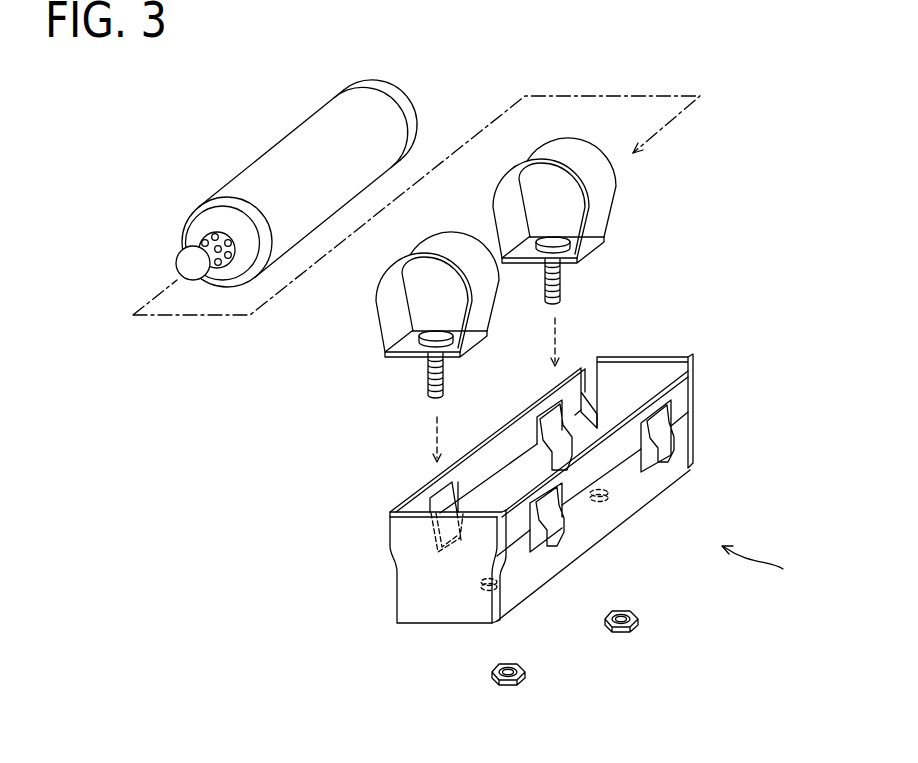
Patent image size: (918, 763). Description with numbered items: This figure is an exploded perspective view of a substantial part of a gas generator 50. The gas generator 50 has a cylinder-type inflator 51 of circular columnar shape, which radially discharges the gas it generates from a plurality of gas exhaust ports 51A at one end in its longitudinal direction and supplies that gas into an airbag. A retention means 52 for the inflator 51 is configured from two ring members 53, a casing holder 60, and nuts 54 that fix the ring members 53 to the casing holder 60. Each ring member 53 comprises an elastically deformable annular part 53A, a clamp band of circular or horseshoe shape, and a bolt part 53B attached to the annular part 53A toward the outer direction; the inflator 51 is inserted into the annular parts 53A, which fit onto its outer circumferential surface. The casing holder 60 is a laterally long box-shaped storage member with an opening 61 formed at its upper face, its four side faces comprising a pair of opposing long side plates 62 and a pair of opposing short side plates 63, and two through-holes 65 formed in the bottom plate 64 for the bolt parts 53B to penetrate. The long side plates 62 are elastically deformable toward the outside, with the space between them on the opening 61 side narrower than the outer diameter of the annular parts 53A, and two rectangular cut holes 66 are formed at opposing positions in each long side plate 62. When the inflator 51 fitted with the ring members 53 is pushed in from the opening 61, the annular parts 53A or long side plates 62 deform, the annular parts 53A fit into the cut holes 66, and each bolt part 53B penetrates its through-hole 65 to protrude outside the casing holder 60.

The gas generator 50 is at (169, 126).
The cylinder-type inflator 51 is at (292, 183).
The gas exhaust ports 51A is at (215, 236).
The retention means 52 is at (292, 453).
The ring member 53 is at (499, 278).
The annular part 53A is at (612, 187).
The bolt part 53B is at (561, 284).
The nut 54 is at (642, 622).
The casing holder 60 is at (709, 419).
The opening 61 is at (621, 387).
The long side plate 62 is at (676, 444).
The short side plate 63 is at (689, 356).
The bottom plate 64 is at (632, 517).
The through-hole 65 is at (488, 590).
The cut hole 66 is at (550, 416).